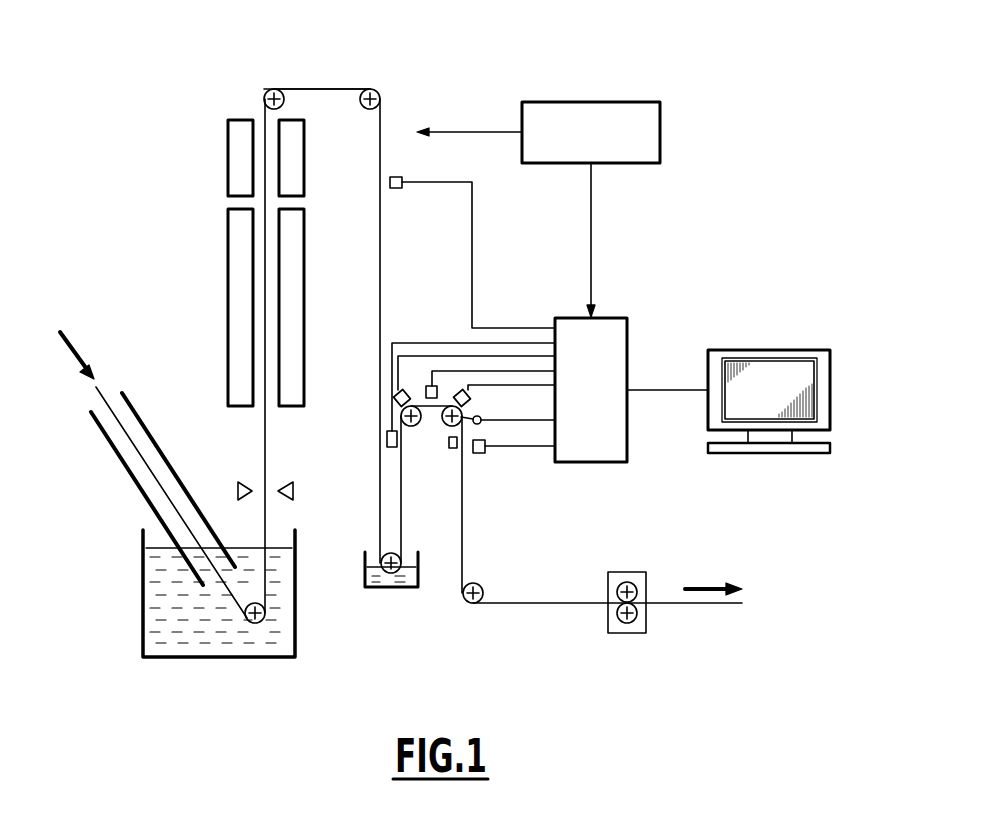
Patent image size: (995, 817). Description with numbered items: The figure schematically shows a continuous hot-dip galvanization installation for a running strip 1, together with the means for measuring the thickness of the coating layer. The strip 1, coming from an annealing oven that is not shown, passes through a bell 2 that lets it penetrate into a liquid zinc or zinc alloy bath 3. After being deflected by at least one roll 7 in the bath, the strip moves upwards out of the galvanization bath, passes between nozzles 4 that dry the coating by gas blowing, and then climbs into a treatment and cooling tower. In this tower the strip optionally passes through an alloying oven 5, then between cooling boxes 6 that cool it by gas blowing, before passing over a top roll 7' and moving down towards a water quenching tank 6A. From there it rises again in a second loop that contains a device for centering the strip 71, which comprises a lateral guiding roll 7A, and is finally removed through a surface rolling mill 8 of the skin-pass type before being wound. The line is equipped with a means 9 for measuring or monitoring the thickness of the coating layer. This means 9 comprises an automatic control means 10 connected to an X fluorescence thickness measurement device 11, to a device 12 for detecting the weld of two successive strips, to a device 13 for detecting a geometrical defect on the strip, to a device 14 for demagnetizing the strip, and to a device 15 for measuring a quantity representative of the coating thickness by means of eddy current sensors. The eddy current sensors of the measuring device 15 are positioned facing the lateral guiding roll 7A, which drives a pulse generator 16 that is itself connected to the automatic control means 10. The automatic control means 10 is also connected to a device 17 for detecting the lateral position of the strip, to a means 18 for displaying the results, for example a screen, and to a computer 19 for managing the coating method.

The strip 1 is at (118, 418).
The bell 2 is at (172, 462).
The liquid zinc or zinc alloy bath 3 is at (185, 625).
The nozzles 4 is at (296, 492).
The alloying oven 5 is at (212, 281).
The cooling boxes 6 is at (212, 165).
The water quenching tank 6A is at (366, 570).
The roll 7 is at (379, 359).
The top roll 7' is at (386, 59).
The lateral guiding roll 7A is at (449, 425).
The device for centering the strip 71 is at (454, 448).
The surface rolling mill 8 is at (622, 633).
The means for measuring or monitoring the thickness of the coating layer 9 is at (650, 326).
The automatic control means 10 is at (609, 330).
The X fluorescence thickness measurement device 11 is at (403, 177).
The device for detecting the weld of two successive strips 12 is at (387, 447).
The device for detecting a geometrical defect on the strip 13 is at (406, 392).
The device for demagnetizing the strip 14 is at (438, 392).
The device for measuring a quantity representative of the thickness of the coating l 15 is at (470, 401).
The pulse generator 16 is at (485, 422).
The device for detecting the lateral position of the strip 17 is at (481, 455).
The means for displaying the results 18 is at (786, 368).
The computer for managing the coating method 19 is at (586, 115).